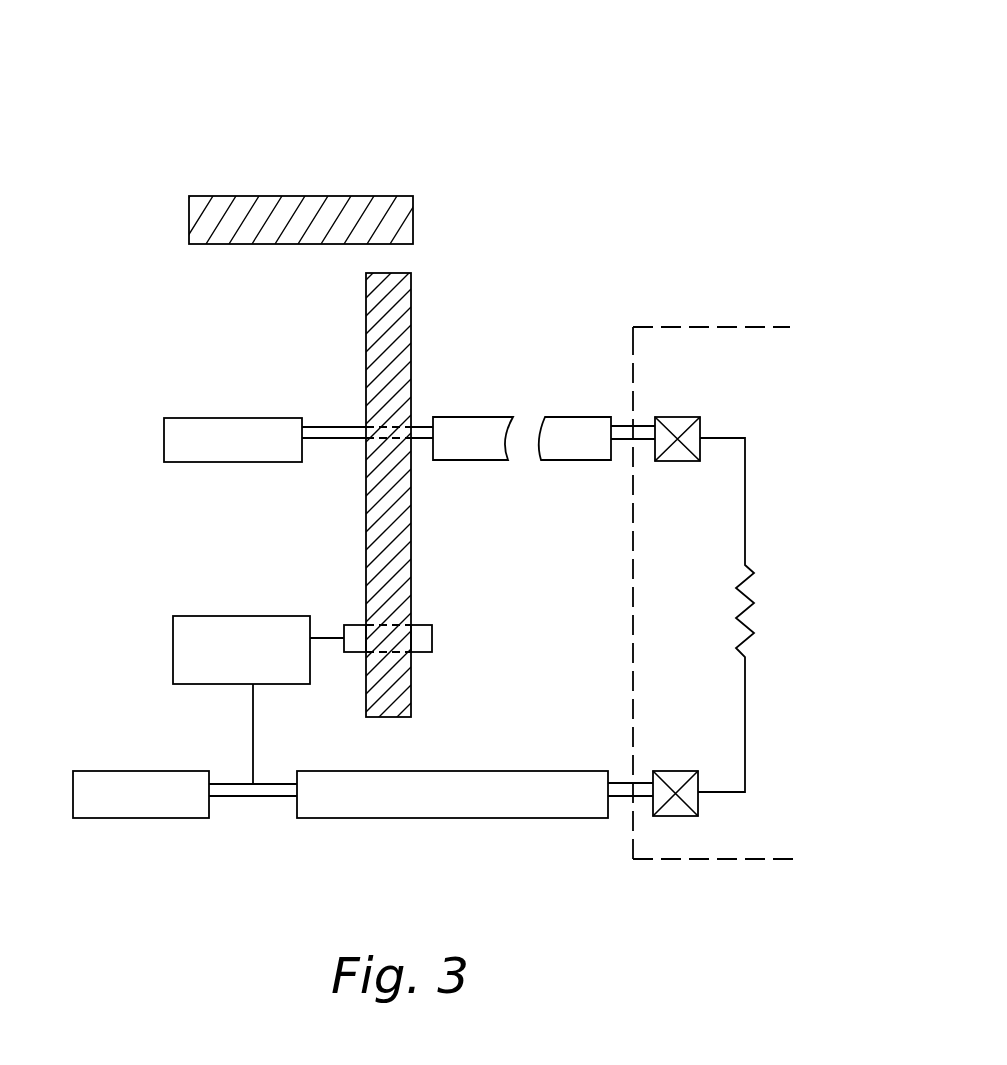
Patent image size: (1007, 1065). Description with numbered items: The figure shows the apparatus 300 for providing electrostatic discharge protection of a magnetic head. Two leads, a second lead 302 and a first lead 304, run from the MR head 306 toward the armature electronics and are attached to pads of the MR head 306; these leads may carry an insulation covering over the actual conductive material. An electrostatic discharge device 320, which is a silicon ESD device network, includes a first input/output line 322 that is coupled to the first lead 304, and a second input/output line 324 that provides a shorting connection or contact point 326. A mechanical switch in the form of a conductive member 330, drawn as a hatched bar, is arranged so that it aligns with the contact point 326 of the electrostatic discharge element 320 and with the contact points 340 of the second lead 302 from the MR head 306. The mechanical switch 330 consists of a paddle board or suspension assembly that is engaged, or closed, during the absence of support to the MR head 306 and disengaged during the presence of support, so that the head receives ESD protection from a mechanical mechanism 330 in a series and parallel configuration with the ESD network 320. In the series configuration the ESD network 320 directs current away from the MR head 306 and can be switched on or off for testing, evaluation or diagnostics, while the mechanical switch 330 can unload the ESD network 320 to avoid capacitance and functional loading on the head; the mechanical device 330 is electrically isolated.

The apparatus 300 is at (570, 92).
The second lead 302 is at (562, 417).
The first lead 304 is at (588, 768).
The MR head 306 is at (675, 862).
The electrostatic discharge device 320 is at (218, 613).
The first input/output line 322 is at (253, 752).
The second input/output line 324 is at (328, 633).
The contact point 326 is at (423, 623).
The conductive member 330 is at (412, 537).
The contact points 340 is at (342, 427).